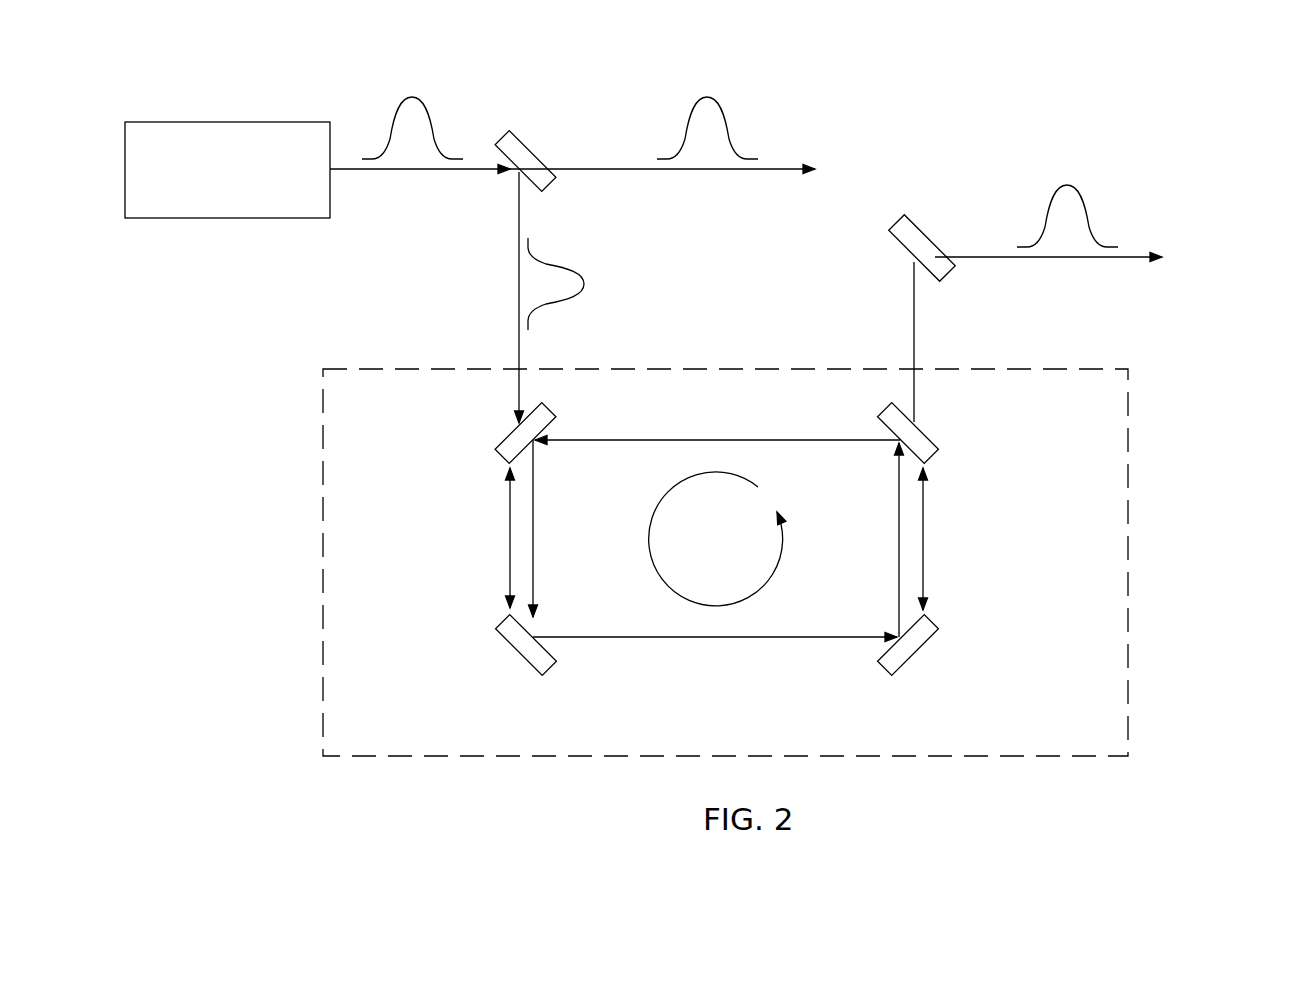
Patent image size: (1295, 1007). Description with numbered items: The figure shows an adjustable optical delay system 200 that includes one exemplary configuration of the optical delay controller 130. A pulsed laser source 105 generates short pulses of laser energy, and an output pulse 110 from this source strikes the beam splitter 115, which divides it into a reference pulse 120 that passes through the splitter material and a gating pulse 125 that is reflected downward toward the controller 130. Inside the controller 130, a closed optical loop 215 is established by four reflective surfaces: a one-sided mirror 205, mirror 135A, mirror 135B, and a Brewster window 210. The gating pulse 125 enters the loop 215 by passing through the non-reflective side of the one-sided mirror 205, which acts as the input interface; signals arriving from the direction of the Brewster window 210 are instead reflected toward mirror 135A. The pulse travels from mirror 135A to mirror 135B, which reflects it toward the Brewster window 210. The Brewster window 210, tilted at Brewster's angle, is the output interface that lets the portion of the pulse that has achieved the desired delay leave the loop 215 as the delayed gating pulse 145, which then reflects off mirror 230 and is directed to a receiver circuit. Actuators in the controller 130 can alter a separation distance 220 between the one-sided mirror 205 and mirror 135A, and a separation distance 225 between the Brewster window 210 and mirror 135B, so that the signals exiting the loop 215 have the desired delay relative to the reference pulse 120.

The pulsed laser source 105 is at (307, 198).
The output pulse 110 is at (399, 105).
The beam splitter 115 is at (527, 141).
The reference pulse 120 is at (723, 104).
The gating pulse 125 is at (582, 297).
The optical delay controller 130 is at (1130, 526).
The mirror 135A is at (551, 666).
The mirror 135B is at (880, 665).
The delayed gating pulse 145 is at (1086, 195).
The adjustable optical delay system 200 is at (1190, 84).
The one-sided mirror 205 is at (500, 440).
The Brewster window 210 is at (936, 440).
The optical loop 215 is at (775, 571).
The separation distance 220 is at (507, 556).
The separation distance 225 is at (926, 555).
The mirror 230 is at (921, 232).